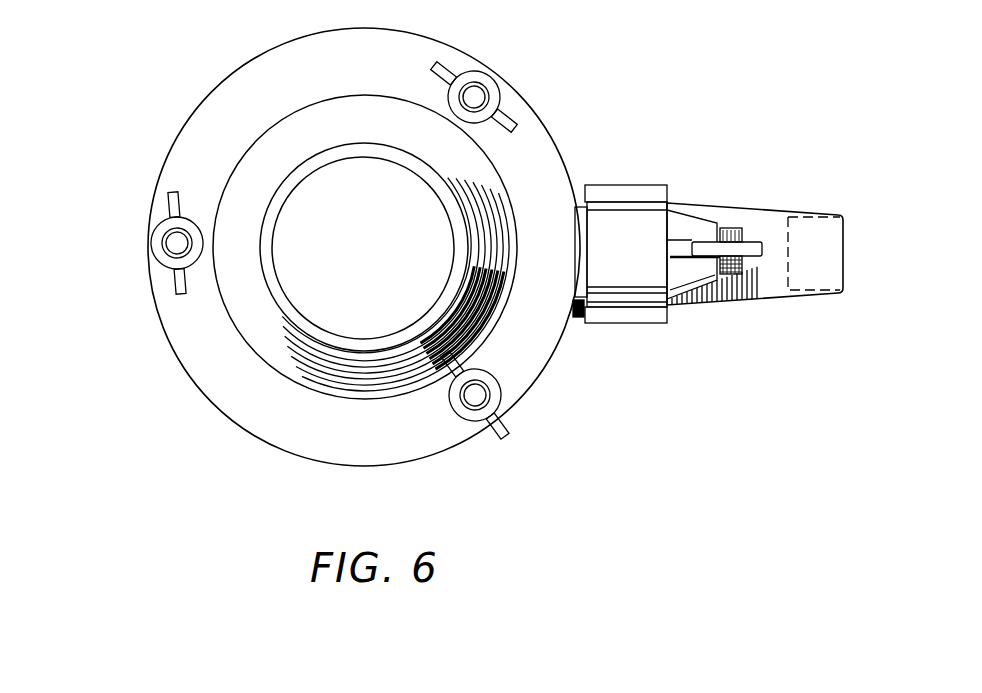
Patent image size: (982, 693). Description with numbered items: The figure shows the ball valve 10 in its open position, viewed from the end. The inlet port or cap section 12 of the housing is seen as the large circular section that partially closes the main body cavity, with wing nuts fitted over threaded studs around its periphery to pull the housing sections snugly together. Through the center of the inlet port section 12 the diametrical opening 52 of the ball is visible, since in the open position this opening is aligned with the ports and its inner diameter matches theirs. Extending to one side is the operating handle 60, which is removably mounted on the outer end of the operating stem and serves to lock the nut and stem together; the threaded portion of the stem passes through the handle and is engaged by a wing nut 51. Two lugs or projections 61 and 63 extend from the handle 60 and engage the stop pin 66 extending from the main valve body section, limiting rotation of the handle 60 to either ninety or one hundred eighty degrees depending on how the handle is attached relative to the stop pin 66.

The ball valve 10 is at (555, 451).
The inlet port or cap section 12 is at (243, 73).
The diametrical opening 52 is at (291, 192).
The wing nut 51 is at (757, 240).
The operating handle 60 is at (787, 297).
The lug or projection 61 is at (635, 318).
The lug or projection 63 is at (641, 190).
The stop pin 66 is at (573, 318).